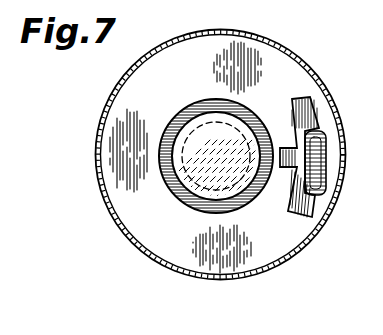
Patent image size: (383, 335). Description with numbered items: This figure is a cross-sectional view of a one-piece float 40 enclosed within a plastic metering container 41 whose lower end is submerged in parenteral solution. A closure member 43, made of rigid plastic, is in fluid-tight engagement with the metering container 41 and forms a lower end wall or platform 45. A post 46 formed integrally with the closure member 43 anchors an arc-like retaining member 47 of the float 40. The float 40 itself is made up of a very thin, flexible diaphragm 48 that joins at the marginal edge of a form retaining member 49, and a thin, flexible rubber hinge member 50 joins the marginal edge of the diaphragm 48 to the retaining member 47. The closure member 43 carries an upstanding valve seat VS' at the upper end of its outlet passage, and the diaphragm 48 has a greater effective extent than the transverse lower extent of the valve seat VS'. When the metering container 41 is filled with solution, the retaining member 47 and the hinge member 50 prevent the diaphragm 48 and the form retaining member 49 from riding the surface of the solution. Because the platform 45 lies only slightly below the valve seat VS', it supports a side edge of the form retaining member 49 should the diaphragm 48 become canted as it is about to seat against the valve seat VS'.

The float 40 is at (152, 131).
The metering container 41 is at (100, 203).
The closure member 43 is at (200, 252).
The platform 45 is at (237, 61).
The post 46 is at (316, 170).
The retaining member 47 is at (304, 112).
The diaphragm 48 is at (218, 127).
The form retaining member 49 is at (188, 205).
The hinge member 50 is at (277, 175).
The valve seat VS' is at (236, 136).